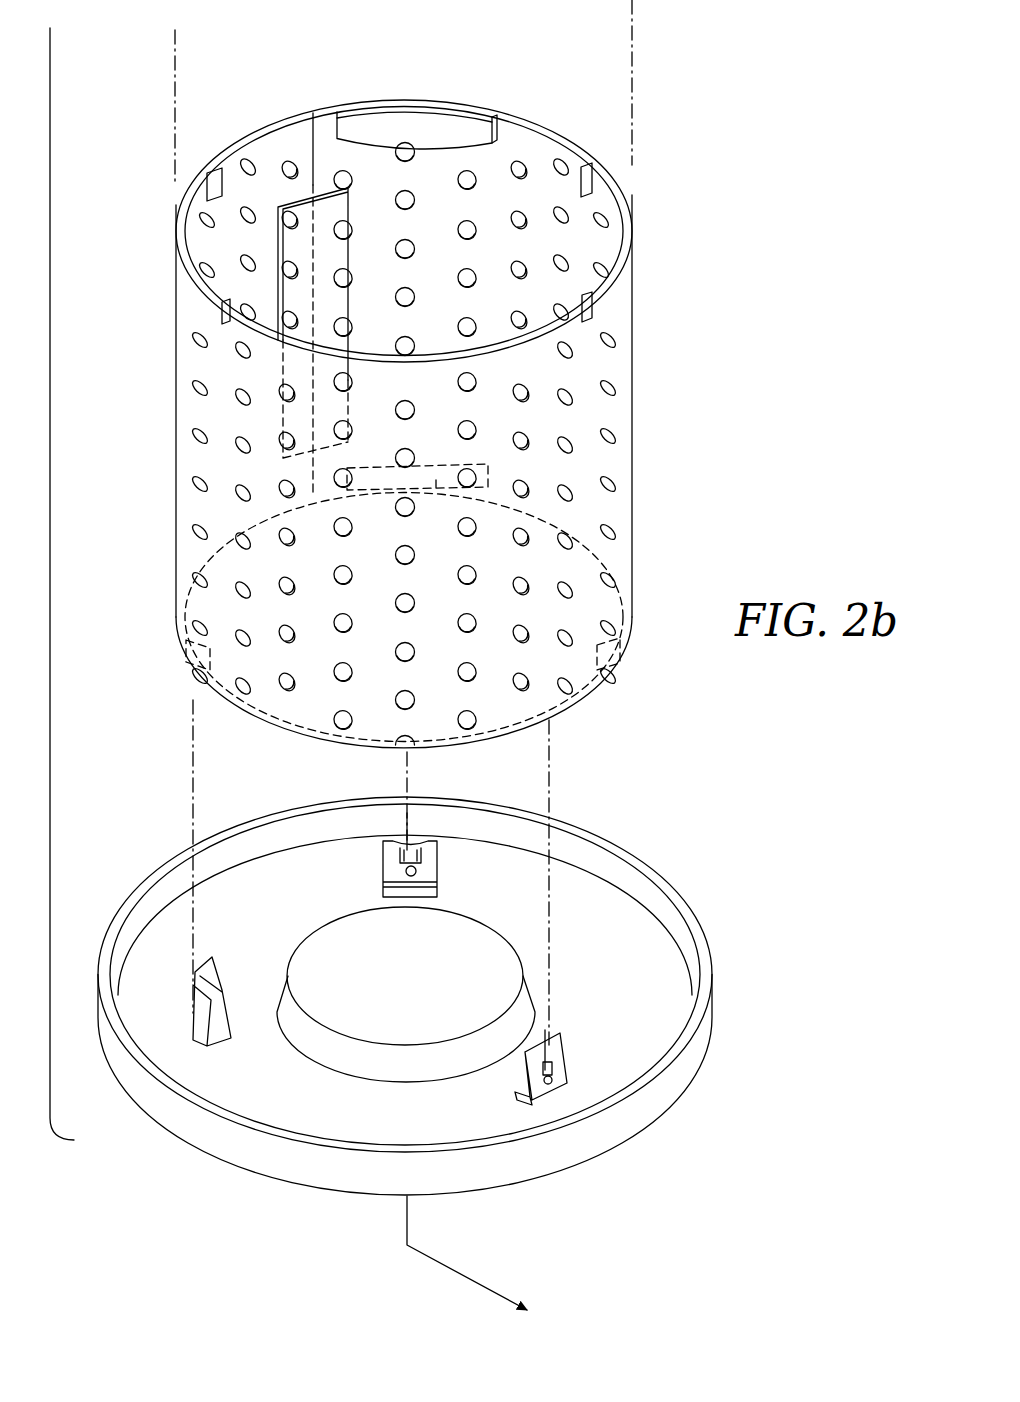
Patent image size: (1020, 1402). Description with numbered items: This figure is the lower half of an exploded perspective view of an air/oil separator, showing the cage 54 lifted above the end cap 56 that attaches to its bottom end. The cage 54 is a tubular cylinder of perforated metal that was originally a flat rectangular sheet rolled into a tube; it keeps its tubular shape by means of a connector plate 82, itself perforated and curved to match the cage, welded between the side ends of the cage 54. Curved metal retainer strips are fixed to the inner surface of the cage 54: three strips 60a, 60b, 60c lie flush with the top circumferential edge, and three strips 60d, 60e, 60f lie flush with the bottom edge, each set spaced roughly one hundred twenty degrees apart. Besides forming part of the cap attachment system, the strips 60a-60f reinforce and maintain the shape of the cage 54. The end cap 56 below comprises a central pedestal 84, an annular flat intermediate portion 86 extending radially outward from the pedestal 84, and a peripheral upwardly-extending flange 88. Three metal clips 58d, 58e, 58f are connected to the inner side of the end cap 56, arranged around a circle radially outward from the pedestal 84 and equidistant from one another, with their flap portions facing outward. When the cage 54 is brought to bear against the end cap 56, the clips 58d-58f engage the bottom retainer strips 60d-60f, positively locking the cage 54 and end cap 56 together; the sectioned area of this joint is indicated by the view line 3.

The cage 54 is at (628, 455).
The end cap 56 is at (113, 1160).
The metal clip 58d is at (562, 1040).
The metal clip 58e is at (214, 960).
The metal clip 58f is at (385, 868).
The retainer strip 60a is at (590, 186).
The retainer strip 60b is at (215, 185).
The retainer strip 60c is at (450, 118).
The retainer strip 60d is at (623, 646).
The retainer strip 60e is at (198, 656).
The retainer strip 60f is at (437, 482).
The connector plate 82 is at (285, 207).
The central pedestal 84 is at (470, 934).
The intermediate portion 86 is at (357, 1120).
The flange 88 is at (612, 834).
The section view line for FIG. 3 is at (480, 1266).